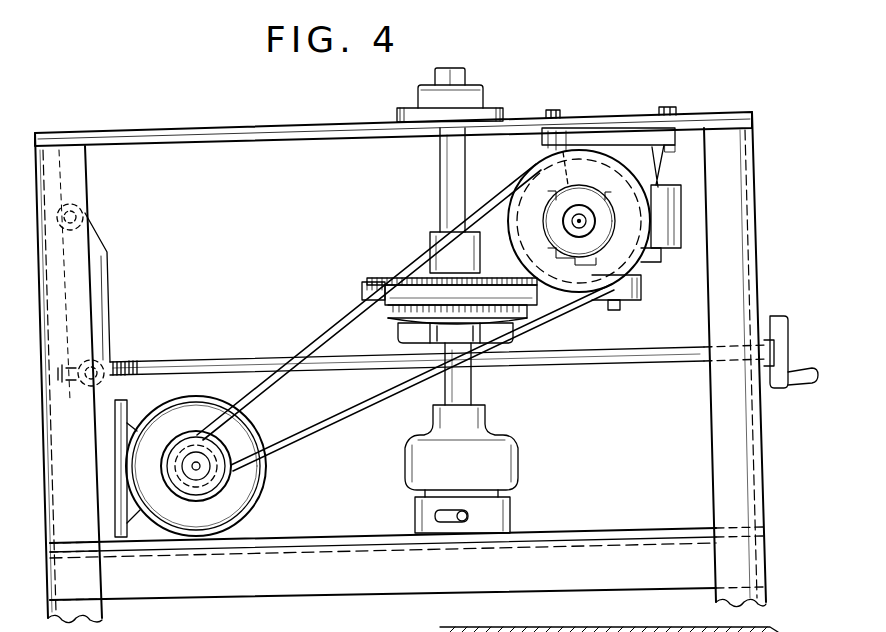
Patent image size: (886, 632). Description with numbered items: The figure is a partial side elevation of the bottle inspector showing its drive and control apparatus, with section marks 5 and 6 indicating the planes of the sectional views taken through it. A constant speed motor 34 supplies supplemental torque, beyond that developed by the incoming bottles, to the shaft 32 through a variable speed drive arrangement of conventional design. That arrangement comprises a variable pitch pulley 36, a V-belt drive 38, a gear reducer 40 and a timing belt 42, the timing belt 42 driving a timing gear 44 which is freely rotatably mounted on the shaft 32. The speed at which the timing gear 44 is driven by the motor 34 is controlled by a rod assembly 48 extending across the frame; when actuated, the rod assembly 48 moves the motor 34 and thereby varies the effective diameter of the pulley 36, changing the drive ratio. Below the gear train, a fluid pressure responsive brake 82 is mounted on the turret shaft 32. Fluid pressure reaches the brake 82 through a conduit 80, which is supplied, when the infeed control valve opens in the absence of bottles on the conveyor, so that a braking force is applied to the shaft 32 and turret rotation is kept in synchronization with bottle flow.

The section line 5- 5 is at (392, 58).
The section line 6- 6 is at (130, 154).
The shaft 32 is at (452, 160).
The constant speed motor 34 is at (185, 405).
The variable pitch pulley 36 is at (228, 483).
The V-belt drive 38 is at (315, 350).
The gear reducer 40 is at (674, 230).
The timing belt 42 is at (533, 290).
The timing gear 44 is at (378, 278).
The rod assembly 48 is at (648, 353).
The conduit 80 is at (467, 515).
The brake 82 is at (503, 455).